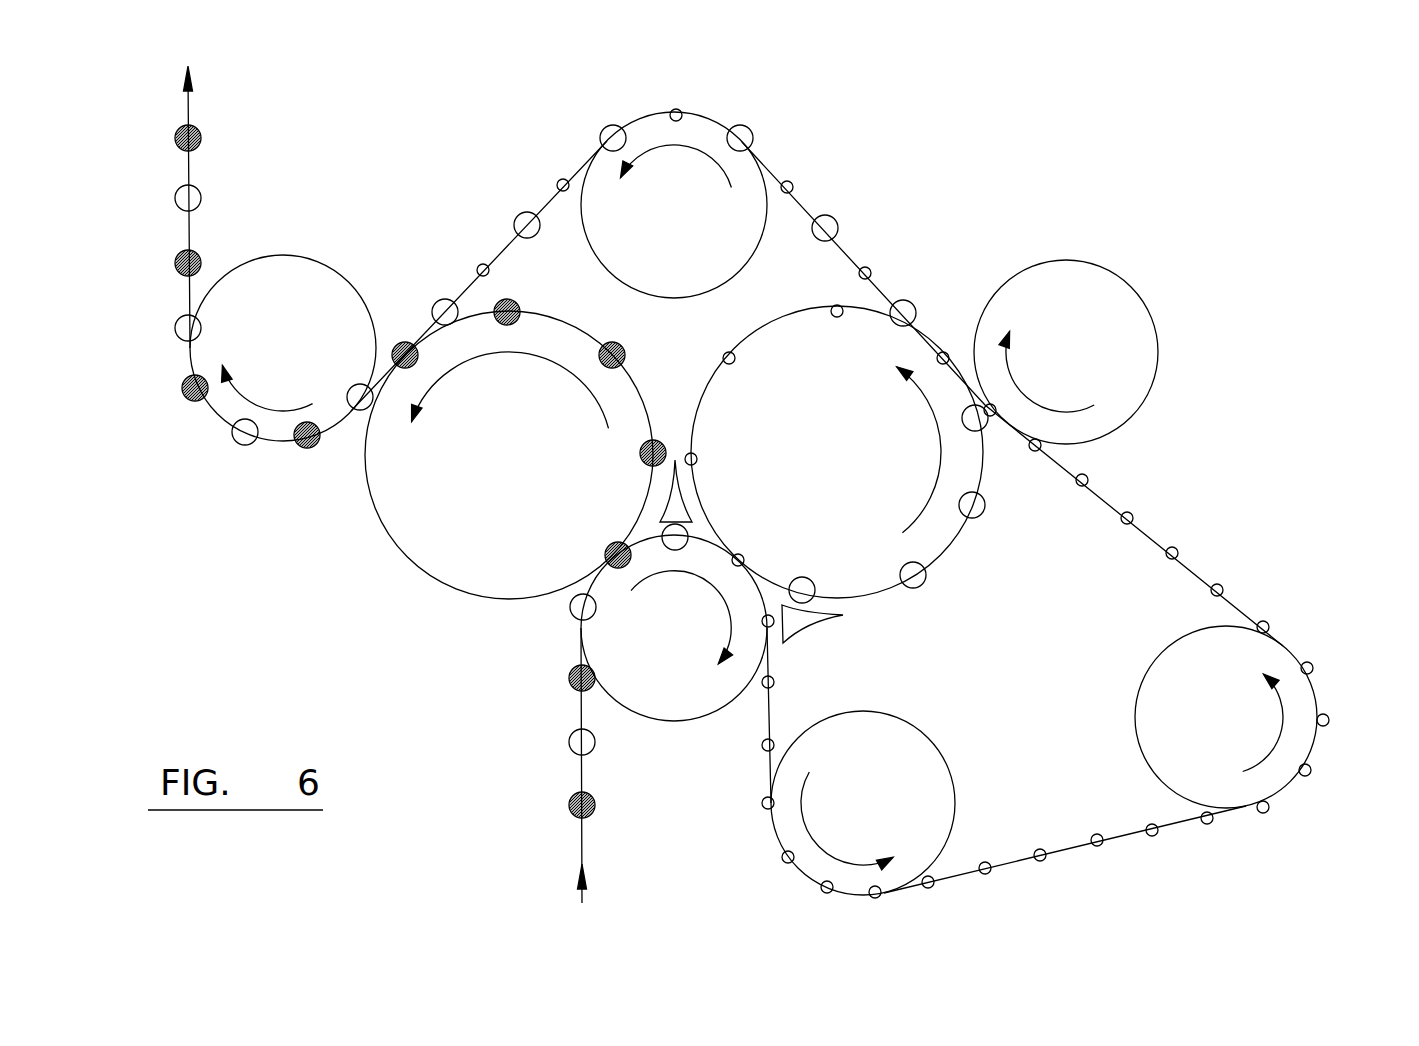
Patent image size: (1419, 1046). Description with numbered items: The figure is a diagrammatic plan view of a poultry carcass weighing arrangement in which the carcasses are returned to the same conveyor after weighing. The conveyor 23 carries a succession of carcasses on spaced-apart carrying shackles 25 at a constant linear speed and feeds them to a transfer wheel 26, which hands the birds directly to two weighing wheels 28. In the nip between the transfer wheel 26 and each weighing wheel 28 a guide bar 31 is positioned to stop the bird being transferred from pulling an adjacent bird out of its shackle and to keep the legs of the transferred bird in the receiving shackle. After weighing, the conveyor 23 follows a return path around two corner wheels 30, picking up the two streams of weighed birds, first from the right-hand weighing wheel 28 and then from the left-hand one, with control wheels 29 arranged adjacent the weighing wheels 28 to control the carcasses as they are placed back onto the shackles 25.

The first conveyor 23 is at (580, 842).
The poultry carcass carrying shackle 25 is at (570, 803).
The transfer wheel 26 is at (618, 638).
The weighing wheels 28 is at (422, 518).
The control wheels 29 is at (303, 283).
The corner wheels 30 is at (792, 825).
The guide bars 31 is at (667, 502).